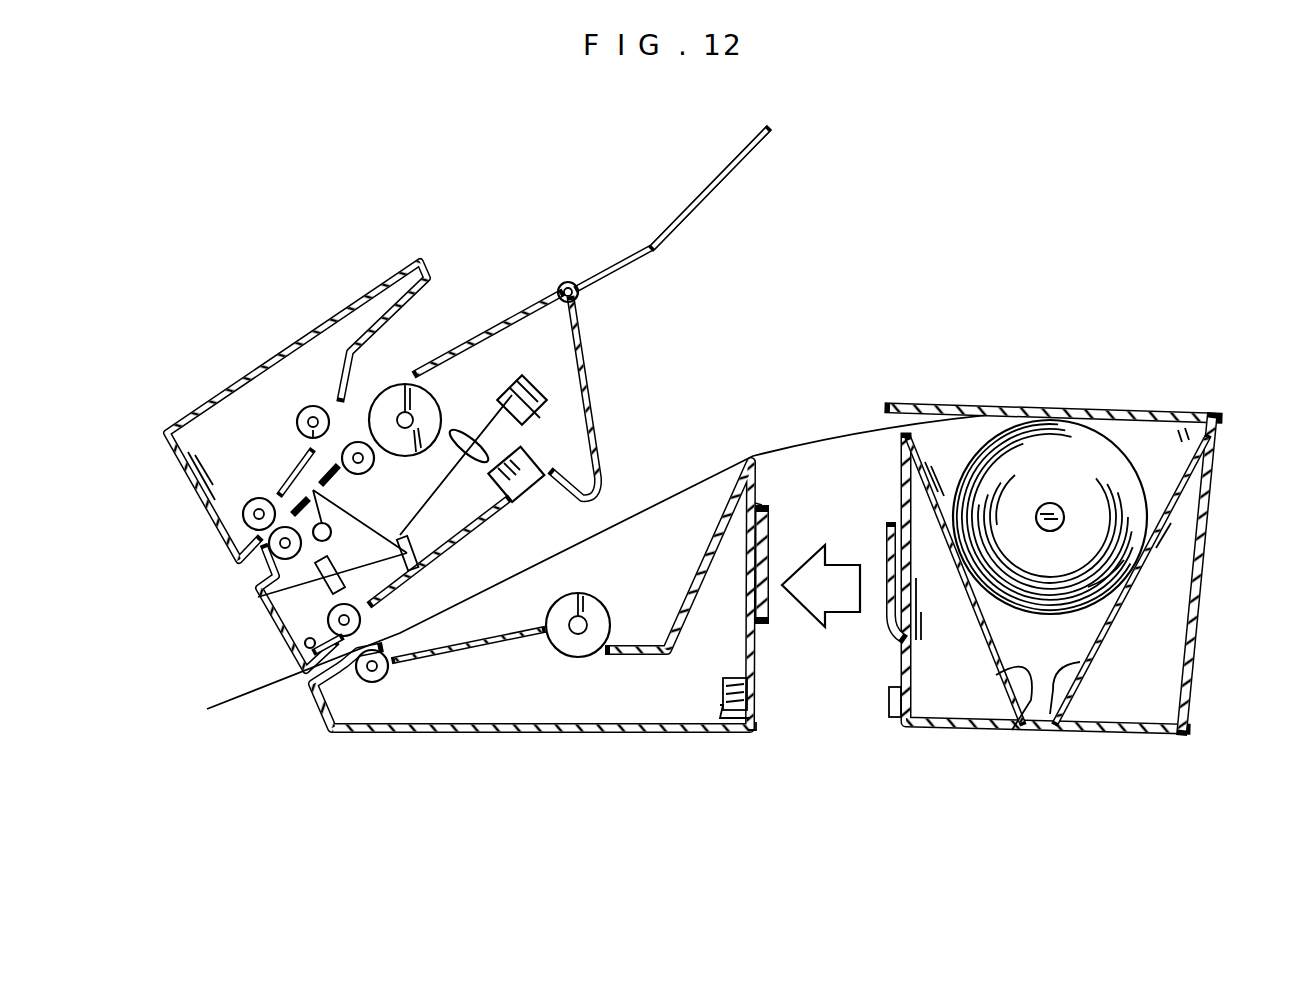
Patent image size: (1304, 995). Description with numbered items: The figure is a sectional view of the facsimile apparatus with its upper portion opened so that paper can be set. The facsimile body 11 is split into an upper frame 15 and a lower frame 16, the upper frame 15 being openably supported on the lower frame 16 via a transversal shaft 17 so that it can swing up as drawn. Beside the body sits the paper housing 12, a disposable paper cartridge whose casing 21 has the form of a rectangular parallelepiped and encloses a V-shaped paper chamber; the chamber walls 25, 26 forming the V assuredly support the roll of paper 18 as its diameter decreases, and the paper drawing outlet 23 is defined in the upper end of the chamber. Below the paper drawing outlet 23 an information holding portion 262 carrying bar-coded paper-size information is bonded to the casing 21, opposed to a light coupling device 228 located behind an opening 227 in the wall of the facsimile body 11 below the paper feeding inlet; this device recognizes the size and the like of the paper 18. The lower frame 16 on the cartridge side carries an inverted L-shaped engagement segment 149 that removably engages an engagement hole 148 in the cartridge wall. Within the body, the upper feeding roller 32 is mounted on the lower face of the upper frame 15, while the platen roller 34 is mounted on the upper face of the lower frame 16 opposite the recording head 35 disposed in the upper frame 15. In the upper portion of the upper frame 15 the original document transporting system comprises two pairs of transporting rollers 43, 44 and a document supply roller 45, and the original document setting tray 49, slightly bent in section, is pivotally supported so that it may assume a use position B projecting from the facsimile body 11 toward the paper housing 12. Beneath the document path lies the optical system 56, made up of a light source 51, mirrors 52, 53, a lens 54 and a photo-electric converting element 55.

The facsimile body 11 is at (260, 356).
The paper housing 12 is at (1059, 400).
The upper frame 15 is at (200, 497).
The lower frame 16 is at (386, 735).
The transversal shaft 17 is at (303, 655).
The paper 18 is at (1088, 450).
The casing 21 is at (1197, 653).
The paper drawing outlet 23 is at (900, 408).
The chamber wall 25 is at (1016, 726).
The chamber wall 26 is at (1054, 728).
The upper feeding roller 32 is at (330, 620).
The platen roller 34 is at (578, 652).
The recording head 35 is at (525, 482).
The transporting rollers 43 is at (255, 499).
The transporting rollers 44 is at (313, 406).
The document supply roller 45 is at (405, 385).
The original document setting tray 49 is at (743, 158).
The light source 51 is at (283, 490).
The mirror 52 is at (420, 558).
The mirror 53 is at (264, 588).
The lens 54 is at (468, 438).
The photo-electric converting element 55 is at (536, 394).
The optical system 56 is at (505, 362).
The engagement hole 148 is at (890, 524).
The engagement segment 149 is at (764, 619).
The opening 227 is at (762, 698).
The light coupling device 228 is at (735, 720).
The information holding portion 262 is at (894, 728).
The use position B is at (674, 216).